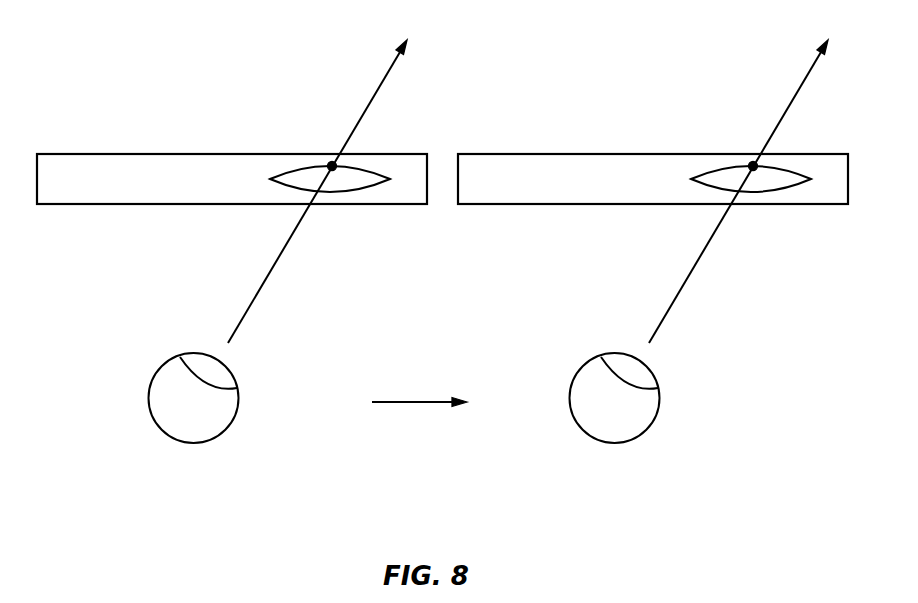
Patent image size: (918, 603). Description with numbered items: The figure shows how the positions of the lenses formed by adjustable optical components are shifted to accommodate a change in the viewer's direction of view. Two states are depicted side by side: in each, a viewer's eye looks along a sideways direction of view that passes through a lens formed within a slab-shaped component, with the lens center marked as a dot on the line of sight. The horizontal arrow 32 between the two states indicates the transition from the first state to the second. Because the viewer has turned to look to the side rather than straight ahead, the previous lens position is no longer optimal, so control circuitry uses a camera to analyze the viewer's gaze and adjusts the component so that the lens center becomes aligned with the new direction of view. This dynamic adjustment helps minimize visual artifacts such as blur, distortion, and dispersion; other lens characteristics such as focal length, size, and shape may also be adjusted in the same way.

The direction of change (arrow) 32 is at (417, 403).